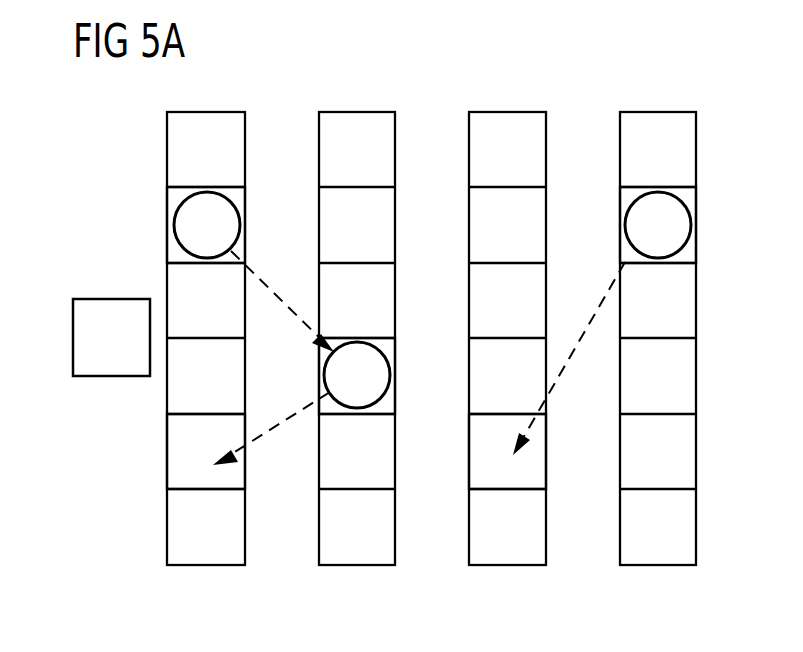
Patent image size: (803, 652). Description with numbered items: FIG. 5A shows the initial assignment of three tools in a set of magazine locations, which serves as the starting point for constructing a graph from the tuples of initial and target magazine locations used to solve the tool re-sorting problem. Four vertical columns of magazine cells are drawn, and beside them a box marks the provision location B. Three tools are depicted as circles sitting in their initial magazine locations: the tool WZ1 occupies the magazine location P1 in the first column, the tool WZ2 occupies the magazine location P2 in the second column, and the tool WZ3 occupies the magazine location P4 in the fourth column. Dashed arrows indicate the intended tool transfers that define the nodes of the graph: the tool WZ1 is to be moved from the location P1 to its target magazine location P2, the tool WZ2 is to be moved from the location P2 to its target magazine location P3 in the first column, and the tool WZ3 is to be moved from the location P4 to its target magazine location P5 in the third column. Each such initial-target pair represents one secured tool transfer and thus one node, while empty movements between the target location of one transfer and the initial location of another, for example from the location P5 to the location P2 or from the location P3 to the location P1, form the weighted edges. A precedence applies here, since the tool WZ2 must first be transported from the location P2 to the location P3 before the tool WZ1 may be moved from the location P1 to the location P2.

The provision location B is at (112, 298).
The magazine location P1 is at (167, 200).
The magazine location P2 is at (319, 352).
The magazine location P3 is at (167, 433).
The magazine location P4 is at (619, 200).
The magazine location P5 is at (469, 432).
The tool WZ1 is at (240, 225).
The tool WZ2 is at (390, 375).
The tool WZ3 is at (622, 212).